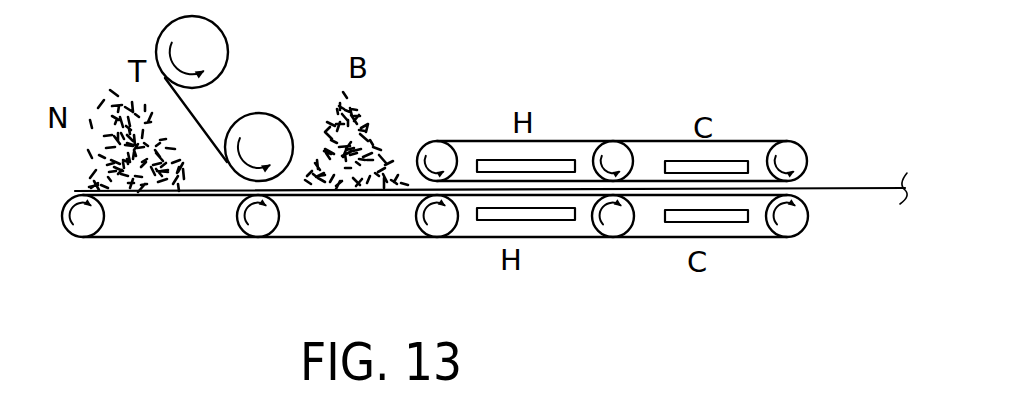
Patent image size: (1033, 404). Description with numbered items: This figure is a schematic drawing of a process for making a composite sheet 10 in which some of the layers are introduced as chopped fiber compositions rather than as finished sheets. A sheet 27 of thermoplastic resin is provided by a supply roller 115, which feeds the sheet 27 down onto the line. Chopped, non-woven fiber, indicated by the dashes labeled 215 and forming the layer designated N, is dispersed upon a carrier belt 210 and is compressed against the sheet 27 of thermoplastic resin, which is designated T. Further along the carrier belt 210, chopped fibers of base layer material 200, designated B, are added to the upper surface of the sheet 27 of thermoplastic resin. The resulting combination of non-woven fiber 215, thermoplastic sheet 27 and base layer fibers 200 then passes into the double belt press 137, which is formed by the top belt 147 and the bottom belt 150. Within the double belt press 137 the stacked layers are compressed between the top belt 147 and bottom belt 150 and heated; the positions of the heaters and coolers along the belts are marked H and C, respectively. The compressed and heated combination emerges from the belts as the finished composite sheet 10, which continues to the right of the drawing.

The composite sheet 10 is at (855, 189).
The sheet of thermoplastic resin 27 is at (198, 128).
The supply roller 115 is at (225, 32).
The double belt press 137 is at (777, 113).
The top belt 147 is at (583, 141).
The bottom belt 150 is at (583, 239).
The chopped fibers of base layer material 200 is at (370, 118).
The carrier belt 210 is at (142, 237).
The chopped non-woven fiber 215 is at (95, 98).